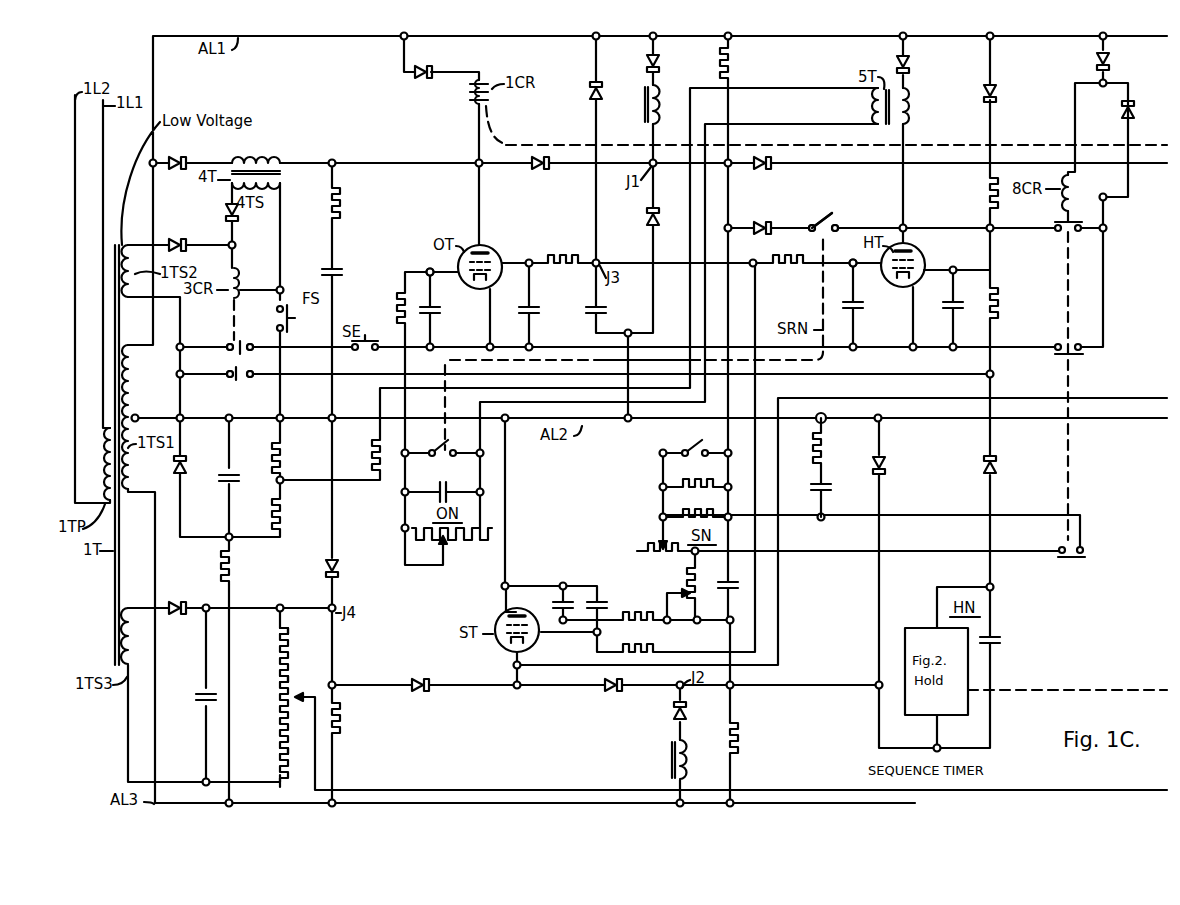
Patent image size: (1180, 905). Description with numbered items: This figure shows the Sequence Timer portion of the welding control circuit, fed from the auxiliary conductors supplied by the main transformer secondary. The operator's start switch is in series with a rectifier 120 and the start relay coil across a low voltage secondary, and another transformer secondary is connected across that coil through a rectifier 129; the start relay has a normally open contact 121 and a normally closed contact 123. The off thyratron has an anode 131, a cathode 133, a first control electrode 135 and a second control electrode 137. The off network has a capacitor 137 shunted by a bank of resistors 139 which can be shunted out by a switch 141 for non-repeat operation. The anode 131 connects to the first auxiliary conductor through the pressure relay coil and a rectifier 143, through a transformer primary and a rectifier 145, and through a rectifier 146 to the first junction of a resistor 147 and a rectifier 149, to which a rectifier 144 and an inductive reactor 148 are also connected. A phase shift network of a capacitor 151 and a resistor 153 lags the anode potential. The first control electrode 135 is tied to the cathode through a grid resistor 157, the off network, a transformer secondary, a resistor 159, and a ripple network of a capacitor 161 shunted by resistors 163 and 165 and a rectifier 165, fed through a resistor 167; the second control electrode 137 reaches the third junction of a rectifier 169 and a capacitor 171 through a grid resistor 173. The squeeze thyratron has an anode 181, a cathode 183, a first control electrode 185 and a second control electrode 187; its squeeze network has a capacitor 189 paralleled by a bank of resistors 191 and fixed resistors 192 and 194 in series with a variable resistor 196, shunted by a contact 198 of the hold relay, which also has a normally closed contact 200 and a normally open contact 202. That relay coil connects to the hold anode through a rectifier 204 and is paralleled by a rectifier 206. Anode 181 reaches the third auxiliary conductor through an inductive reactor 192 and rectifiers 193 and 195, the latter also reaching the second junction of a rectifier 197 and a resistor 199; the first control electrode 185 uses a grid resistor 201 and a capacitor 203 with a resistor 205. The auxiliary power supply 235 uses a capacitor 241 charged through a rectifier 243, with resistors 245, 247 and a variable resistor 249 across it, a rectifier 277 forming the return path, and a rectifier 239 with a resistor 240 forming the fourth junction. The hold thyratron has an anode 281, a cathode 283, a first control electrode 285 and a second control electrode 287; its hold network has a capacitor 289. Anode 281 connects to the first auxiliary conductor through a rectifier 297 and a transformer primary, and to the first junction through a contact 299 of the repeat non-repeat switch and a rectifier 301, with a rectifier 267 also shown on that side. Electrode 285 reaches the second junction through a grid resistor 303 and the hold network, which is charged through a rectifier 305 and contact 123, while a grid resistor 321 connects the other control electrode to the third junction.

The rectifier 120 is at (177, 240).
The normally open contact 121 is at (230, 365).
The normally closed contact 123 is at (232, 382).
The rectifier 129 is at (226, 212).
The anode 131 is at (487, 251).
The cathode 133 is at (489, 293).
The first control electrode 135 is at (529, 302).
The second control electrode / capacitor 137 is at (443, 264).
The bank of resistors 139 is at (458, 543).
The switch 141 is at (648, 358).
The rectifier 143 is at (424, 80).
The rectifier 144 is at (659, 64).
The rectifier 145 is at (174, 158).
The rectifier 146 is at (535, 170).
The resistor 147 is at (732, 57).
The inductive reactor 148 is at (647, 90).
The rectifier 149 is at (645, 217).
The capacitor 151 is at (321, 274).
The resistor 153 is at (342, 197).
The grid resistor 157 is at (391, 314).
The resistor 159 is at (369, 452).
The capacitor 161 is at (217, 484).
The resistor 163 is at (272, 451).
The resistor / rectifier 165 is at (172, 472).
The resistor 167 is at (221, 572).
The rectifier 169 is at (587, 90).
The capacitor 171 is at (604, 311).
The grid resistor 173 is at (580, 256).
The anode 181 is at (505, 652).
The cathode 183 is at (561, 590).
The first control electrode 185 is at (503, 608).
The second control electrode 187 is at (541, 648).
The capacitor 189 is at (711, 589).
The bank of resistors 191 is at (688, 573).
The fixed resistor / inductive reactor 192 is at (663, 751).
The rectifier 193 is at (668, 713).
The fixed resistor 194 is at (672, 510).
The rectifier 195 is at (605, 686).
The variable resistor 196 is at (642, 546).
The rectifier 197 is at (885, 467).
The contact 198 is at (1057, 564).
The resistor 199 is at (741, 735).
The normally closed contact 200 is at (1064, 232).
The grid resistor 201 is at (645, 608).
The normally open contact 202 is at (1062, 364).
The capacitor 203 is at (831, 496).
The rectifier 204 is at (1097, 65).
The resistor 205 is at (830, 444).
The rectifier 206 is at (1122, 111).
The auxiliary power supply 235 is at (302, 800).
The rectifier 239 is at (324, 573).
The resistor 240 is at (346, 718).
The capacitor 241 is at (192, 698).
The rectifier 243 is at (181, 606).
The fixed resistor 245 is at (270, 750).
The fixed resistor 247 is at (273, 640).
The variable resistor 249 is at (270, 688).
The diode 267 is at (764, 170).
The rectifier 277 is at (418, 681).
The anode 281 is at (915, 251).
The cathode 283 is at (862, 309).
The first control electrode 285 is at (927, 265).
The second control electrode 287 is at (866, 264).
The capacitor 289 is at (1001, 645).
The rectifier 297 is at (910, 62).
The contact 299 is at (821, 218).
The rectifier 301 is at (759, 222).
The grid resistor 303 is at (1004, 298).
The rectifier 305 is at (1000, 470).
The grid resistor 321 is at (773, 262).